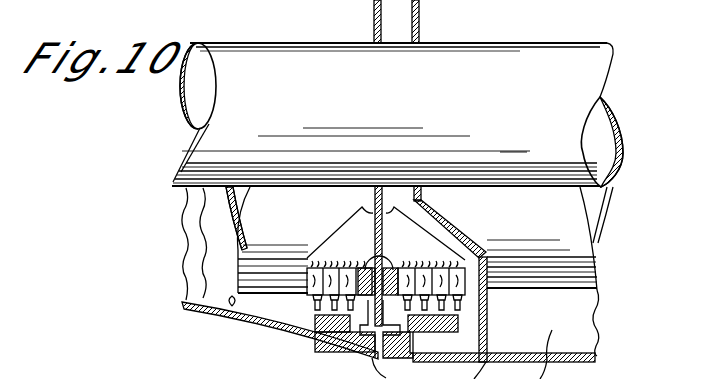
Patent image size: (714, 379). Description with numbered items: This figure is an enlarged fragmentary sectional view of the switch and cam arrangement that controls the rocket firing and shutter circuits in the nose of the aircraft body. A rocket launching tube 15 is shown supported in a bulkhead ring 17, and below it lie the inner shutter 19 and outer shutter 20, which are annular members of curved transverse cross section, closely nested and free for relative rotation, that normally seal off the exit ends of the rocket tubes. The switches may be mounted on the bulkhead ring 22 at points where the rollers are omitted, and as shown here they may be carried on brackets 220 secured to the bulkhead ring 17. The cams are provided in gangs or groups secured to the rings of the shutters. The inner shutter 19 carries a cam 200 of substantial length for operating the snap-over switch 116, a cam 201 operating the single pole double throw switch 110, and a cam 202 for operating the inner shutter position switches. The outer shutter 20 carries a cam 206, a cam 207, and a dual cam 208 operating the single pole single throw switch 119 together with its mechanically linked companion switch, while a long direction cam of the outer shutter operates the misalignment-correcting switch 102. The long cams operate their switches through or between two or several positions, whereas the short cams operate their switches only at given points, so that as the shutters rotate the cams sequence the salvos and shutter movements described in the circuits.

The rocket launching tubes 15 is at (400, 103).
The bulkhead ring 17 is at (420, 28).
The inner shutter 19 is at (196, 305).
The outer shutter 20 is at (238, 328).
The bulkhead ring 22 is at (373, 28).
The single pole double throw switch 110 is at (325, 282).
The snap-over switch 116 is at (366, 290).
The cam 200 is at (362, 268).
The brackets 220 is at (430, 240).
The single pole single throw switch 119 is at (480, 263).
The cam 201 is at (318, 303).
The cam 202 is at (316, 314).
The shutter misalignment-correcting switch 102 is at (368, 300).
The cam 206 is at (458, 318).
The cam 207 is at (430, 312).
The dual cam 208 is at (442, 302).